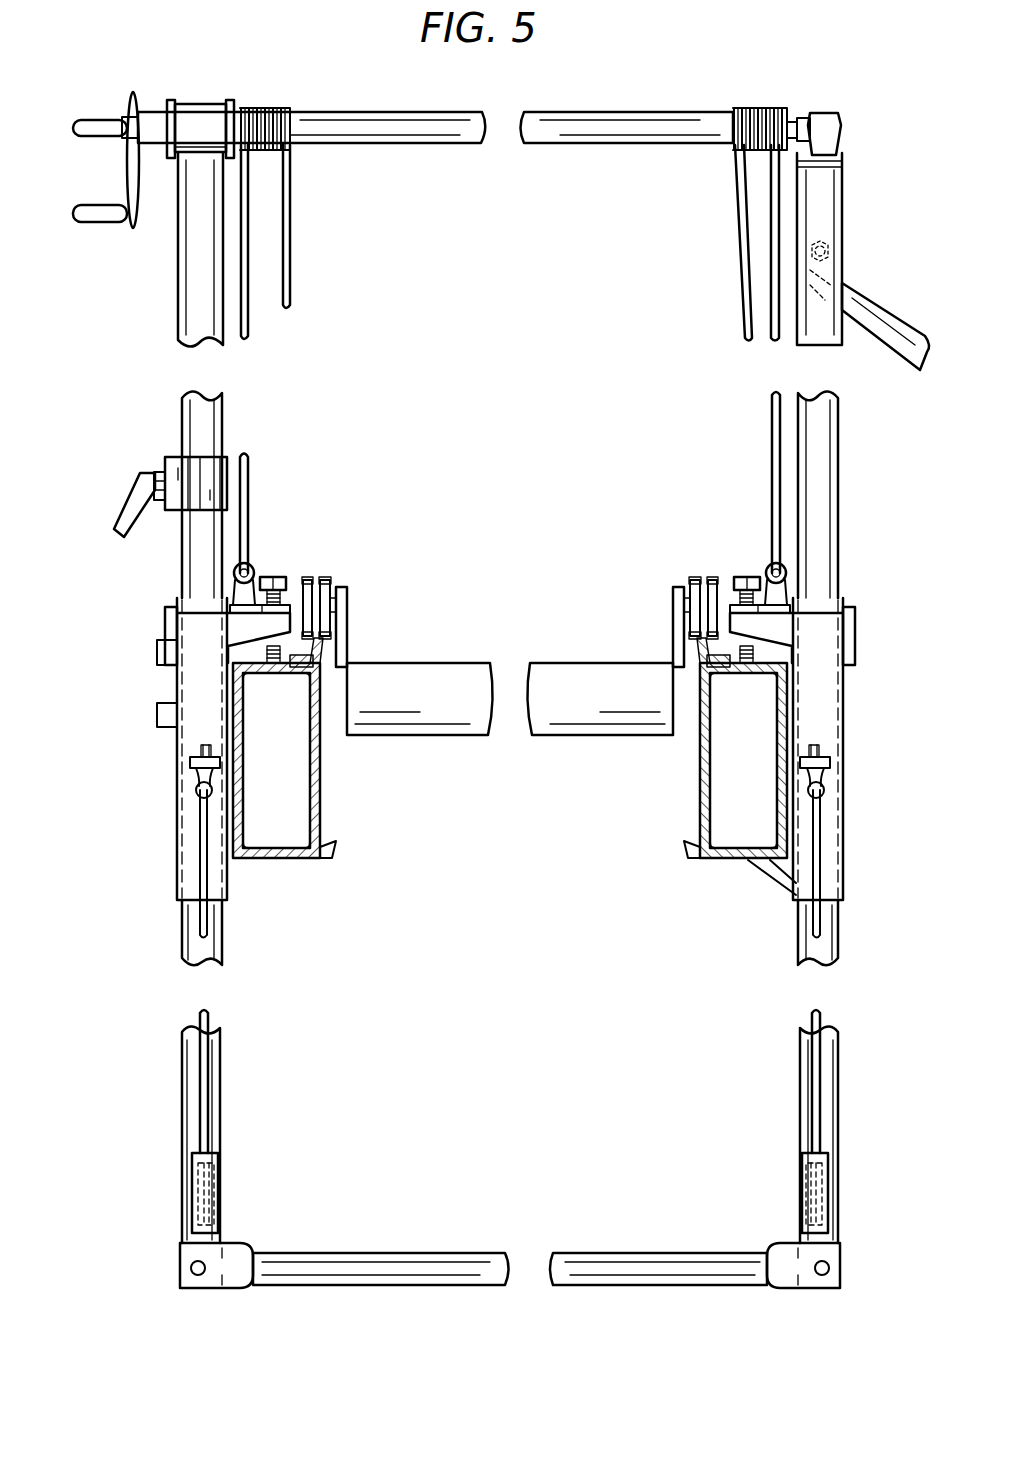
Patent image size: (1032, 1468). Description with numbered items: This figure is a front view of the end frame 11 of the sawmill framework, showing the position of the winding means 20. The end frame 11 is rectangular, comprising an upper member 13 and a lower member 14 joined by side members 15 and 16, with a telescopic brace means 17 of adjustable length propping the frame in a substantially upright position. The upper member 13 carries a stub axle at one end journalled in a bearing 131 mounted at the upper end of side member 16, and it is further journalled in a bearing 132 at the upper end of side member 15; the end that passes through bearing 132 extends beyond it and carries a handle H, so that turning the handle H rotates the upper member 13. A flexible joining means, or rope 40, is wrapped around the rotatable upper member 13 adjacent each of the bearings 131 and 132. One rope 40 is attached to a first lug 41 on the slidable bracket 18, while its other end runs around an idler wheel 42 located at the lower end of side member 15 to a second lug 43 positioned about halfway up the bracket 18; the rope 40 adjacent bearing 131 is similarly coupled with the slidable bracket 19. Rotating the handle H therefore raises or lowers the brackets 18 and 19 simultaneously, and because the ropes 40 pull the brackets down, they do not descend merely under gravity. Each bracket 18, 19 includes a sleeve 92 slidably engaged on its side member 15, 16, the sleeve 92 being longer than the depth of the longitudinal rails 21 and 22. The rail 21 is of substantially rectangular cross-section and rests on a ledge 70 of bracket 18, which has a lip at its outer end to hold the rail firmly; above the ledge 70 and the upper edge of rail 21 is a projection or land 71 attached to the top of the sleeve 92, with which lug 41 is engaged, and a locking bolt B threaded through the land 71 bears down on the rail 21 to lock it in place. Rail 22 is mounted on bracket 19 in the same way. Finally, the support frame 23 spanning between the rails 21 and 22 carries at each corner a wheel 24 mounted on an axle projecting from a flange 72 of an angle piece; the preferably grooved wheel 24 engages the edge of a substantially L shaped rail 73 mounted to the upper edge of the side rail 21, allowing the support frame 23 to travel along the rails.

The end frame 11 is at (521, 364).
The upper member 13 is at (466, 145).
The lower member 14 is at (552, 1252).
The side member 15 is at (192, 326).
The side member 16 is at (826, 472).
The telescopic brace means 17 is at (880, 338).
The slidable bracket 18 is at (200, 725).
The slidable bracket 19 is at (818, 725).
The winding means 20 is at (107, 232).
The longitudinal rail 21 is at (288, 800).
The longitudinal rail 22 is at (730, 798).
The support frame 23 is at (534, 657).
The wheel 24 is at (324, 578).
The rope 40 is at (249, 243).
The first lug 41 is at (249, 572).
The idler wheel 42 is at (215, 1196).
The second lug 43 is at (196, 786).
The ledge 70 is at (300, 862).
The land 71 is at (240, 628).
The flange 72 is at (348, 618).
The L shaped rail 73 is at (320, 658).
The sleeve 92 is at (176, 876).
The bearing 131 is at (824, 116).
The bearing 132 is at (200, 100).
The handle H is at (74, 218).
The locking bolt B is at (278, 577).